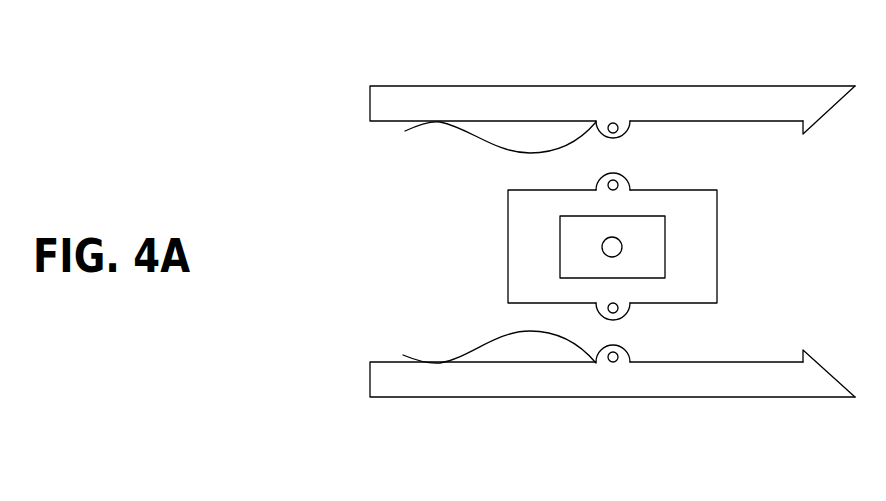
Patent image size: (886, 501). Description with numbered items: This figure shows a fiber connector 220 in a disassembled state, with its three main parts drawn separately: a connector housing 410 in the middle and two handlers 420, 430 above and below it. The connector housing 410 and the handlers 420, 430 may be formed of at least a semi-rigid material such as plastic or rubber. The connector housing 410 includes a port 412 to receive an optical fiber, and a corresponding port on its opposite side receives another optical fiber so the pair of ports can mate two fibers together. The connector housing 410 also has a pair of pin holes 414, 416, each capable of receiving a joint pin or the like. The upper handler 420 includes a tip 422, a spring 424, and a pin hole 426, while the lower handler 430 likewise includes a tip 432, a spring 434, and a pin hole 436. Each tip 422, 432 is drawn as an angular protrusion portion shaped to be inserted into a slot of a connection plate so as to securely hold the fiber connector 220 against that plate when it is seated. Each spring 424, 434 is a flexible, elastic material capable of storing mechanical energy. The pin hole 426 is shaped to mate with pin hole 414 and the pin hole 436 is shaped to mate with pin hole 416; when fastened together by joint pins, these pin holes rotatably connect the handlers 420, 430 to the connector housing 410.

The fiber connector 220 is at (362, 47).
The connector housing 410 is at (717, 246).
The port 412 is at (578, 249).
The pin hole 414 is at (620, 184).
The pin hole 416 is at (620, 309).
The handler 420 is at (615, 86).
The tip 422 is at (803, 134).
The spring 424 is at (470, 133).
The pin hole 426 is at (619, 130).
The handler 430 is at (605, 398).
The tip 432 is at (803, 350).
The spring 434 is at (470, 343).
The pin hole 436 is at (620, 357).